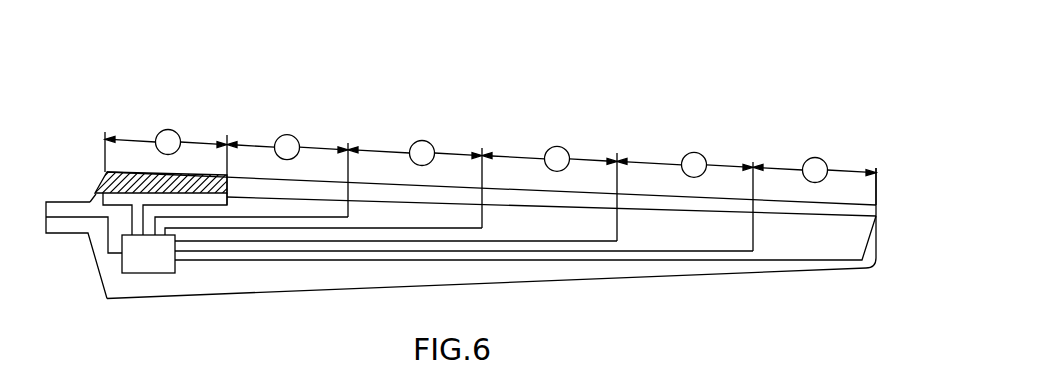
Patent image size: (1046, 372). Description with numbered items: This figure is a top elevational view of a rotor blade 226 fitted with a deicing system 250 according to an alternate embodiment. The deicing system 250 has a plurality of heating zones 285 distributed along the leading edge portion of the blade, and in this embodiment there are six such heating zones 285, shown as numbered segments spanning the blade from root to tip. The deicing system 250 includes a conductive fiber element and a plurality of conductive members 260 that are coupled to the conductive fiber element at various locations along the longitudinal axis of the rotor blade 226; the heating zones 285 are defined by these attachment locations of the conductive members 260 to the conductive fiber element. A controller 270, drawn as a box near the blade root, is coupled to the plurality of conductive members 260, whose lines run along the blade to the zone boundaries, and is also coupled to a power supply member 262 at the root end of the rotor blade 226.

The deicing system 250 is at (491, 164).
The heating zones 285 is at (400, 132).
The conductive members 260 is at (91, 199).
The power supply member 262 is at (72, 220).
The controller 270 is at (145, 265).
The rotor blade 226 is at (543, 272).